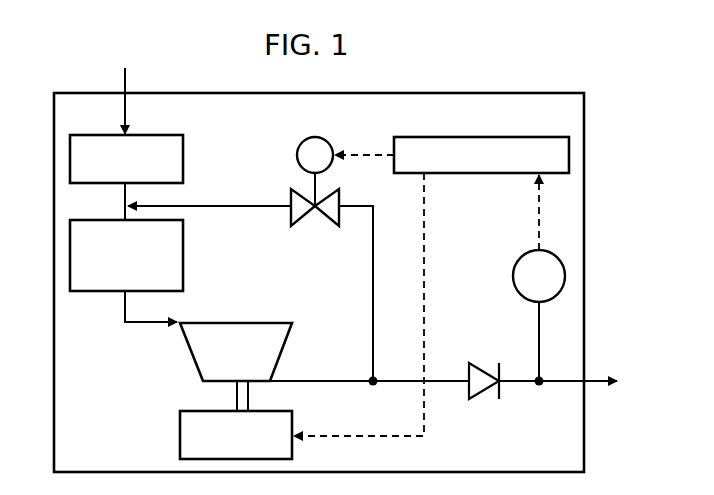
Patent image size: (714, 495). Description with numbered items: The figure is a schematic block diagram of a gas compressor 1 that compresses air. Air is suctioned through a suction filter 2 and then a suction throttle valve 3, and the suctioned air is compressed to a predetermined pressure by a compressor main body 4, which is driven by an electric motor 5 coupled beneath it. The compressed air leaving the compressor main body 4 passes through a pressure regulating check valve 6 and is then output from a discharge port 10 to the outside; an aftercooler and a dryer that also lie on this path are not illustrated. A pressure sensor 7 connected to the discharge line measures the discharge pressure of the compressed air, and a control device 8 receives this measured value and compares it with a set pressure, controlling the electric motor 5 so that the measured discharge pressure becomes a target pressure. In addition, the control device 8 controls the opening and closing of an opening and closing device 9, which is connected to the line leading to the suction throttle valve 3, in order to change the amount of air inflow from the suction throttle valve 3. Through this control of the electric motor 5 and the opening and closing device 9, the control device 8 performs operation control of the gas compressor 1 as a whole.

The gas compressor 1 is at (453, 93).
The suction filter 2 is at (183, 157).
The suction throttle valve 3 is at (183, 263).
The compressor main body 4 is at (192, 353).
The electric motor 5 is at (180, 435).
The pressure regulating check valve 6 is at (478, 363).
The pressure sensor 7 is at (520, 268).
The control device 8 is at (490, 135).
The opening and closing device 9 is at (330, 138).
The discharge port 10 is at (598, 377).